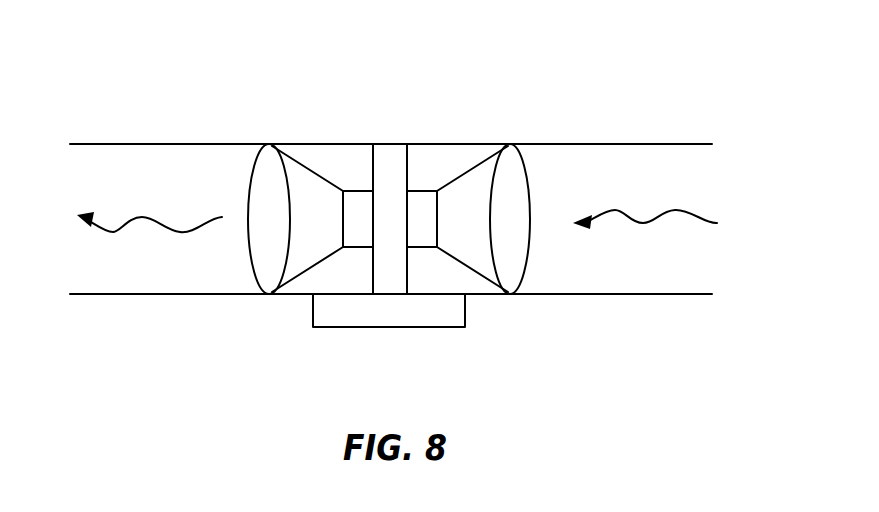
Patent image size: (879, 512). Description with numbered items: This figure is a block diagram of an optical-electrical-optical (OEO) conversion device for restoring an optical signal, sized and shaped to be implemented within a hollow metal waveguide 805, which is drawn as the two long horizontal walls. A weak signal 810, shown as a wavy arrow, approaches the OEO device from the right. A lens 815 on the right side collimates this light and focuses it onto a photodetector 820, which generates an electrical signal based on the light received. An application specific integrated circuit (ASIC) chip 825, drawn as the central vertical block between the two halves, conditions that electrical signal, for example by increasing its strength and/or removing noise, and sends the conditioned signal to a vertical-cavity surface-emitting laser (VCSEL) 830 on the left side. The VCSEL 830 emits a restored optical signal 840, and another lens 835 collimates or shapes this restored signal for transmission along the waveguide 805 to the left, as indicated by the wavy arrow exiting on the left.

The hollow metal waveguide 805 is at (647, 144).
The weak signal 810 is at (660, 222).
The lens 815 is at (518, 147).
The photodetector 820 is at (434, 190).
The application specific integrated circuit (ASIC) chip 825 is at (388, 153).
The vertical-cavity surface-emitting laser (VCSEL) 830 is at (355, 190).
The lens 835 is at (275, 146).
The restored optical signal 840 is at (138, 222).